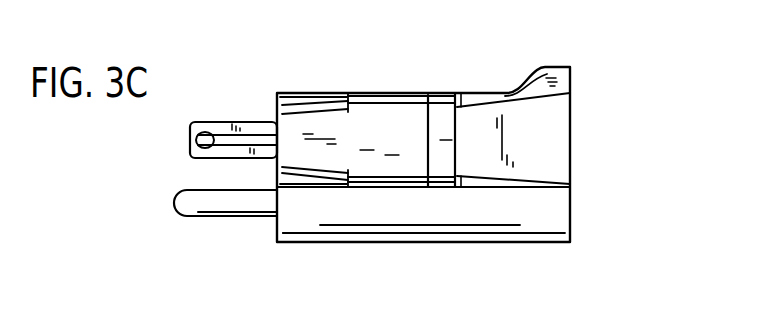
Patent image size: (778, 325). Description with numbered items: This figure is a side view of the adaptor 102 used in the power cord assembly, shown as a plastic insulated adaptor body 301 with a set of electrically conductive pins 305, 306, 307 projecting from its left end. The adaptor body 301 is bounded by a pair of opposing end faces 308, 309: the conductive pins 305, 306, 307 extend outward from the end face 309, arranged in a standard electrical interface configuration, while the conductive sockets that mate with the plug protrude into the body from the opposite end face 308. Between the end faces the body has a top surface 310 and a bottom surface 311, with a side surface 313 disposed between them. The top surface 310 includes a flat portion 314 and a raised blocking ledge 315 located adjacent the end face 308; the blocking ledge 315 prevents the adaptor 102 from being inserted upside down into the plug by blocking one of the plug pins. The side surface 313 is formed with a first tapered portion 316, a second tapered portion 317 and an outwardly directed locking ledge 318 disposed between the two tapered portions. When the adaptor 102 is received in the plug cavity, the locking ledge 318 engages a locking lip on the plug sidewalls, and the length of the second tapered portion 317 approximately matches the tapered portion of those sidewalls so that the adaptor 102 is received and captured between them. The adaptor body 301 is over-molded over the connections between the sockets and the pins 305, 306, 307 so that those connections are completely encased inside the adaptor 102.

The adaptor 102 is at (459, 29).
The adaptor body 301 is at (500, 240).
The conductive pin 305 is at (230, 124).
The conductive pin 306 is at (195, 140).
The conductive pin 307 is at (218, 208).
The end face 308 is at (575, 103).
The end face 309 is at (264, 100).
The top surface 310 is at (407, 93).
The bottom surface 311 is at (323, 240).
The side surface 313 is at (367, 152).
The flat portion 314 is at (367, 93).
The raised blocking ledge 315 is at (553, 66).
The first tapered portion 316 is at (392, 157).
The second tapered portion 317 is at (530, 150).
The locking ledge 318 is at (453, 141).